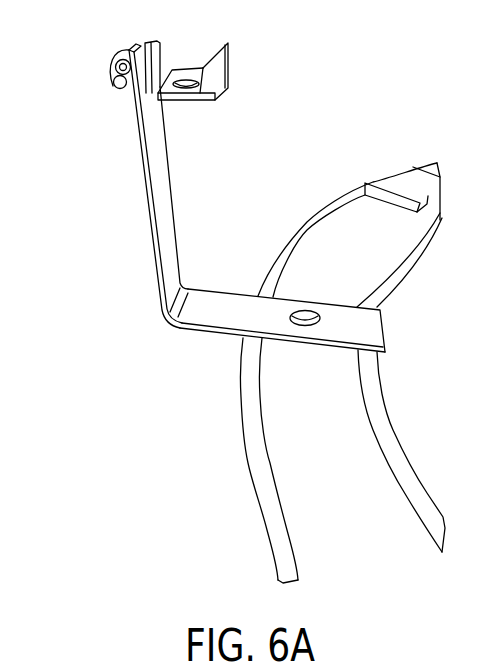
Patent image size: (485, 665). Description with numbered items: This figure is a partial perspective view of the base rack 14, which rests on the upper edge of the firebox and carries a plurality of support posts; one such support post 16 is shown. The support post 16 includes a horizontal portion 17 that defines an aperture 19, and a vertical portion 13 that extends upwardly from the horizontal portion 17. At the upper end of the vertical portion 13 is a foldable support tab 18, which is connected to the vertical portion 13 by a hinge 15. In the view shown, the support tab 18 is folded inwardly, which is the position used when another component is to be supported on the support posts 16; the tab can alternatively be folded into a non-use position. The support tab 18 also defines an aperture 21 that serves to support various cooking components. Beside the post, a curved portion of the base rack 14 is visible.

The vertical portion 13 is at (241, 220).
The base rack 14 is at (222, 482).
The hinge 15 is at (112, 94).
The support post 16 is at (180, 198).
The horizontal portion 17 is at (211, 336).
The foldable support tab 18 is at (245, 57).
The aperture 19 is at (308, 318).
The aperture 21 is at (188, 80).